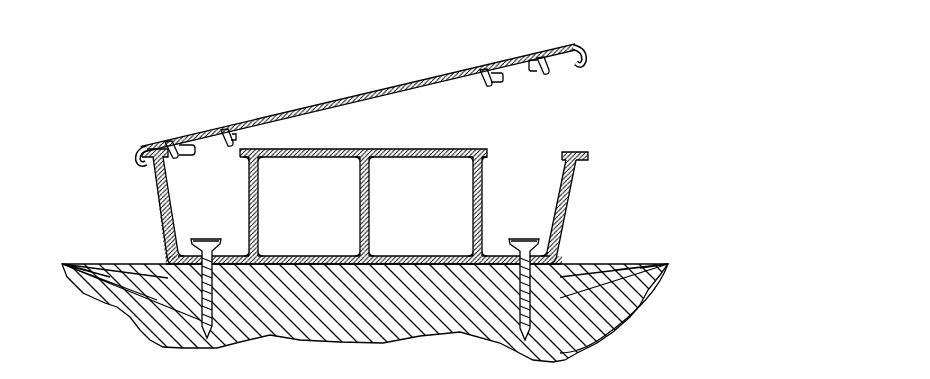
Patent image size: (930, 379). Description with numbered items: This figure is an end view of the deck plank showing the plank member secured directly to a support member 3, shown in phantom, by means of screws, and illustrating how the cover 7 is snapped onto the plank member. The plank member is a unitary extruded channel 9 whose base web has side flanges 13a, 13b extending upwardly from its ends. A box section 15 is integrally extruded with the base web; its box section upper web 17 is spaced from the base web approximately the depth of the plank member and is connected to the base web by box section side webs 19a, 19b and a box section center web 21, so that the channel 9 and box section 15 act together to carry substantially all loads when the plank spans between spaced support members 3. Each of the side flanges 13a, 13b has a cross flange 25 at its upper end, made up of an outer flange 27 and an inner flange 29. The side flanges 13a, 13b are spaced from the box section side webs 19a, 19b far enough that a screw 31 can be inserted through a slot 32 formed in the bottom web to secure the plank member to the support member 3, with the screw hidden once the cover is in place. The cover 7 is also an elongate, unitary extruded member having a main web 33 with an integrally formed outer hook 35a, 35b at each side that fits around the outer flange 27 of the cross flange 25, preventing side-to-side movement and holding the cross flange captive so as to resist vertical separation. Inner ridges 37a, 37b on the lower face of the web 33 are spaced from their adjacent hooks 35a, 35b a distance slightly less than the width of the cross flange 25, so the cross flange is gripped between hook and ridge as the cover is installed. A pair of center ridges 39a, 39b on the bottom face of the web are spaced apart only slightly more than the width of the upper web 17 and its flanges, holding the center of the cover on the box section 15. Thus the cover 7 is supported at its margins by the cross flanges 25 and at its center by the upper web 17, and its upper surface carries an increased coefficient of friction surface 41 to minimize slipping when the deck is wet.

The support member 3 is at (645, 262).
The cover 7 is at (347, 85).
The channel 9 is at (270, 275).
The side flange 13a is at (156, 205).
The side flange 13b is at (587, 188).
The box section 15 is at (369, 180).
The box section upper web 17 is at (443, 148).
The box section side web 19a is at (249, 197).
The box section side web 19b is at (483, 177).
The box section center web 21 is at (369, 208).
The cross flange 25 is at (608, 150).
The outer flange 27 is at (587, 160).
The inner flange 29 is at (556, 176).
The screw 31 is at (187, 322).
The slot 32 is at (120, 316).
The main web 33 is at (358, 98).
The outer hook 35a is at (137, 154).
The outer hook 35b is at (581, 47).
The inner ridge 37a is at (175, 142).
The inner ridge 37b is at (532, 55).
The center ridge 39a is at (226, 129).
The center ridge 39b is at (503, 62).
The increased coefficient of friction surface 41 is at (377, 90).